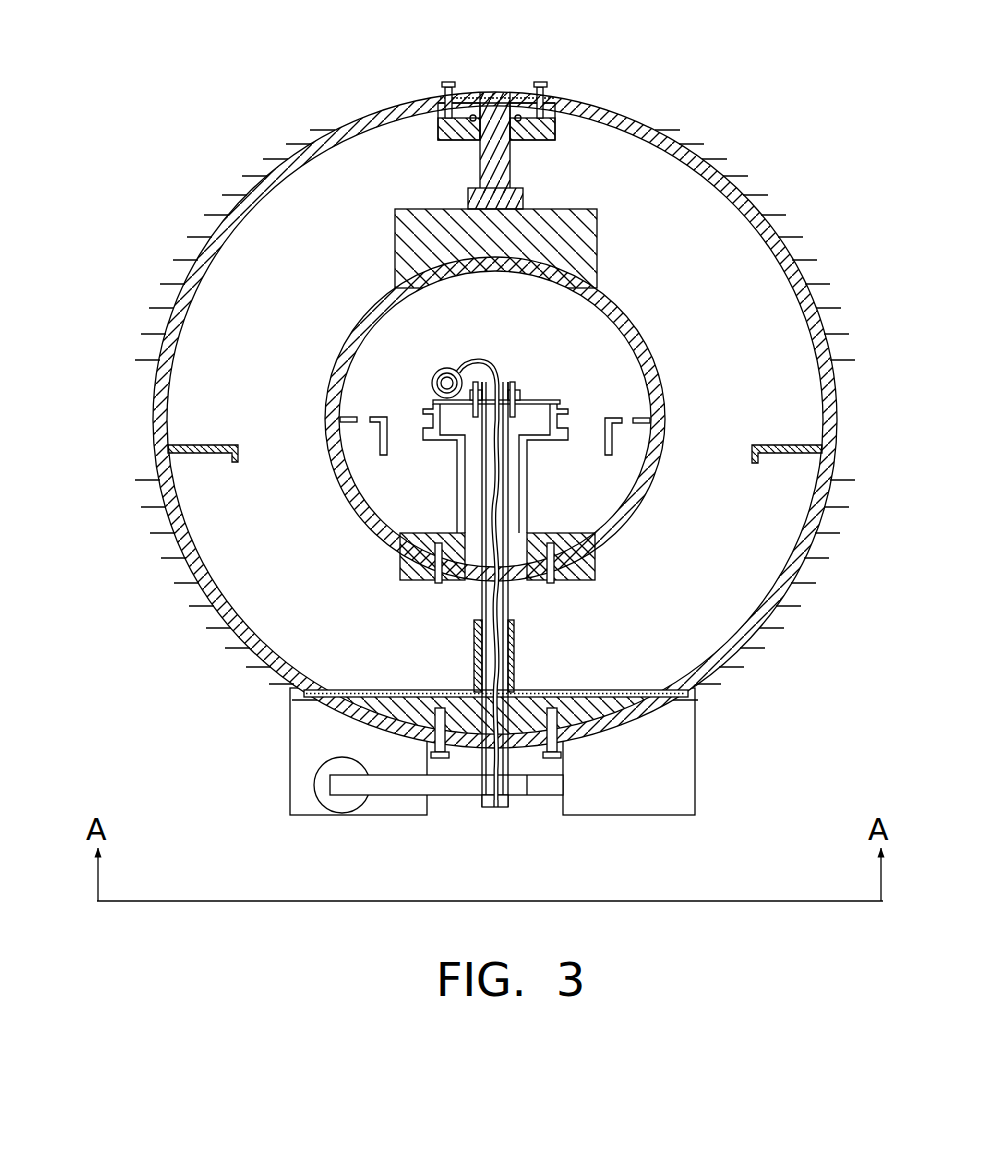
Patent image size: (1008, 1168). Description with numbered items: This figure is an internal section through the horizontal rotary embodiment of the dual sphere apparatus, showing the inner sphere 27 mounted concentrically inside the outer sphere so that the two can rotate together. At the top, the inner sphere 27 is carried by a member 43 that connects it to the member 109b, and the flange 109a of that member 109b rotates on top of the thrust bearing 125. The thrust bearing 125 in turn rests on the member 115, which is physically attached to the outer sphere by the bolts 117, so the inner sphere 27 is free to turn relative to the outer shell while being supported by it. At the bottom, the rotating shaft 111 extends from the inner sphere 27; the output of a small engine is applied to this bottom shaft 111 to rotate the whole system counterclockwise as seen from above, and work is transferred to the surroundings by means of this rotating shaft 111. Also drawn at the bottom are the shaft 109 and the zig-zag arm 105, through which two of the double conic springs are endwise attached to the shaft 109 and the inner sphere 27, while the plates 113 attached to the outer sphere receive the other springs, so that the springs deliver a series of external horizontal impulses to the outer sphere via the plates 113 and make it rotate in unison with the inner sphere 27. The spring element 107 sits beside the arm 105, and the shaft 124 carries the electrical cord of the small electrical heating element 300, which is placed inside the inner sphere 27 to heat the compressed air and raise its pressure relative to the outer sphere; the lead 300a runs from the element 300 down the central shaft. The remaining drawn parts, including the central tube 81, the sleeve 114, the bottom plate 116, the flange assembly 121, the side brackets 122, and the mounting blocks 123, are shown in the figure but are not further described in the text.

The inner sphere 27 is at (641, 331).
The member 43 is at (598, 243).
The central tube 81 is at (474, 585).
The zig-zag arm 105 is at (441, 791).
The roller 107 is at (311, 790).
The shaft 109 is at (509, 808).
The flange 109a is at (470, 97).
The member 109b is at (557, 133).
The rotating shaft 111 is at (513, 608).
The plates 113 is at (305, 748).
The sleeve 114 is at (515, 660).
The member 115 is at (508, 167).
The bottom plate 116 is at (589, 698).
The bolts 117 is at (546, 82).
The flange assembly 121 is at (431, 420).
The side bracket 122 is at (197, 457).
The mounting block 123 is at (469, 584).
The shaft 124 is at (496, 773).
The thrust bearing 125 is at (556, 129).
The electrical heating element 300 is at (439, 379).
The sensor lead 300a is at (499, 503).